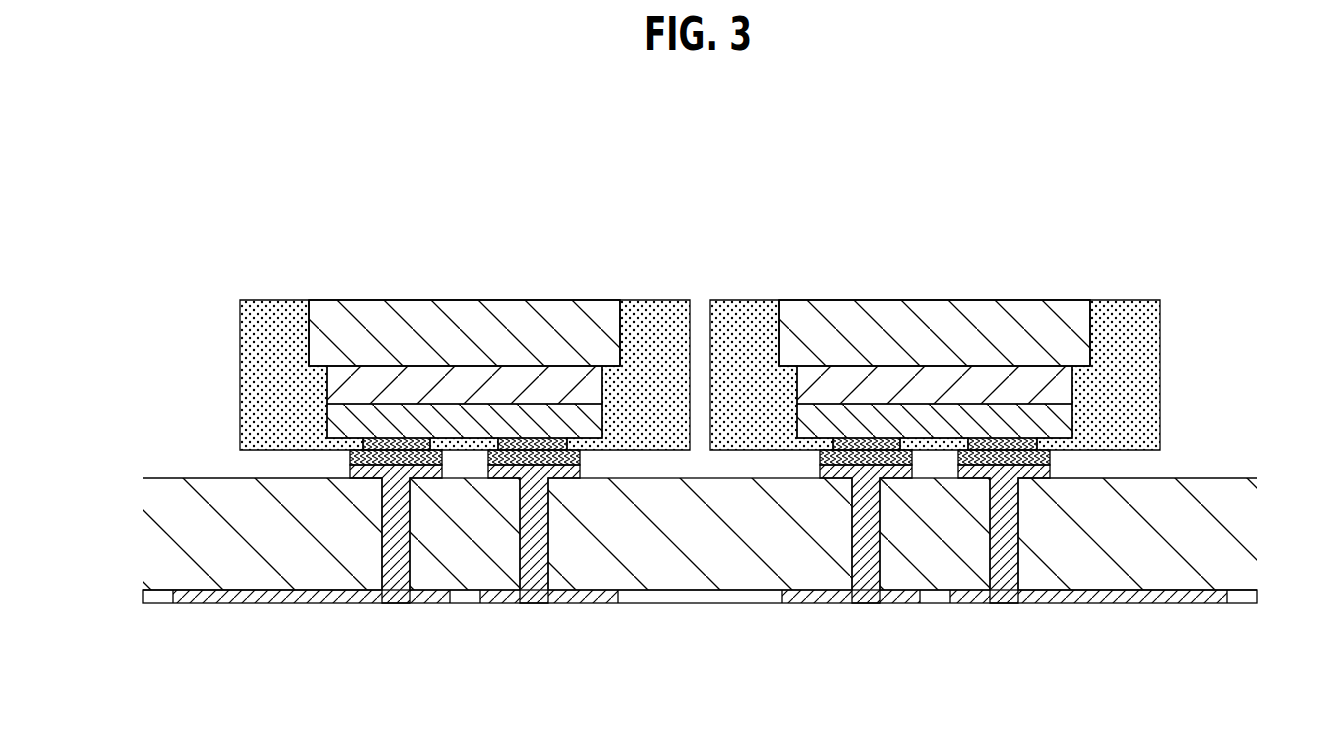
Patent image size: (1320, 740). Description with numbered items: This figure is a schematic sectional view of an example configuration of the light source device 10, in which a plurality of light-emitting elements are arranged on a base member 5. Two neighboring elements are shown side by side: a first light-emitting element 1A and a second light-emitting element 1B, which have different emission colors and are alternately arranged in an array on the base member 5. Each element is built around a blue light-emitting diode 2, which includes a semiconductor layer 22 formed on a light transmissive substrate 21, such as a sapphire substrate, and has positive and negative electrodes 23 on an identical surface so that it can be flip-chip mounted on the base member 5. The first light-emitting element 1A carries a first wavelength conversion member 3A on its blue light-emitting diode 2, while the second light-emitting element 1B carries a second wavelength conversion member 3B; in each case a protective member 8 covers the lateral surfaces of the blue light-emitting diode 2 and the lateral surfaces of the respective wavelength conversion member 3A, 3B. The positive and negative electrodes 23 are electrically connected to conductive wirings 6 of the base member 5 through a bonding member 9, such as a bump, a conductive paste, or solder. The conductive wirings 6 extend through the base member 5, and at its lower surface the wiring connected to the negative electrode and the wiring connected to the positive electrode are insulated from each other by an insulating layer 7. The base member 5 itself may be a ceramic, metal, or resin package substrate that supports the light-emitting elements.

The light source device 10 is at (1228, 191).
The first light-emitting element 1A is at (560, 300).
The second light-emitting element 1B is at (1030, 300).
The blue light-emitting diode 2 is at (699, 308).
The light transmissive substrate 21 is at (374, 385).
The semiconductor layer 22 is at (427, 423).
The positive and negative electrodes 23 is at (534, 445).
The first wavelength conversion member 3A is at (325, 320).
The second wavelength conversion member 3B is at (795, 320).
The base member 5 is at (1227, 490).
The conductive wiring 6 is at (392, 603).
The insulating layer 7 is at (158, 603).
The protective member 8 is at (650, 320).
The bonding member 9 is at (352, 456).